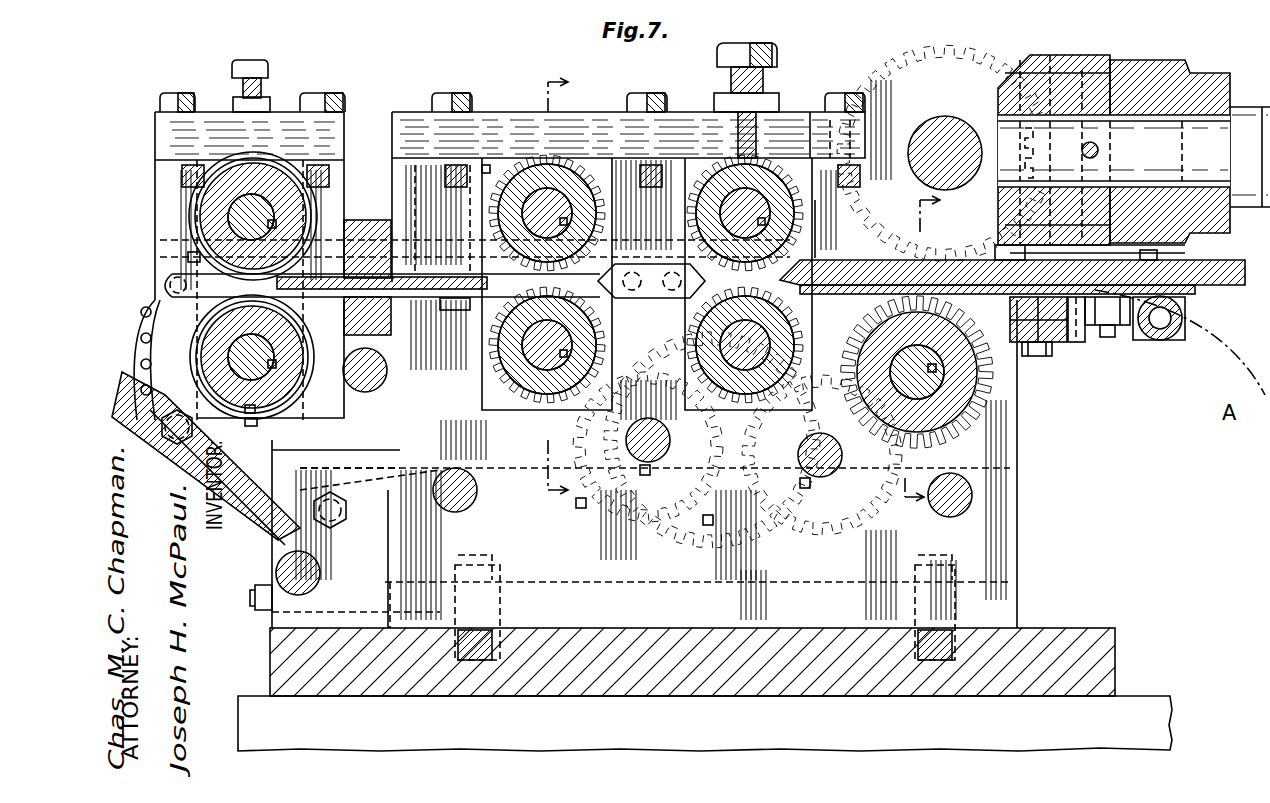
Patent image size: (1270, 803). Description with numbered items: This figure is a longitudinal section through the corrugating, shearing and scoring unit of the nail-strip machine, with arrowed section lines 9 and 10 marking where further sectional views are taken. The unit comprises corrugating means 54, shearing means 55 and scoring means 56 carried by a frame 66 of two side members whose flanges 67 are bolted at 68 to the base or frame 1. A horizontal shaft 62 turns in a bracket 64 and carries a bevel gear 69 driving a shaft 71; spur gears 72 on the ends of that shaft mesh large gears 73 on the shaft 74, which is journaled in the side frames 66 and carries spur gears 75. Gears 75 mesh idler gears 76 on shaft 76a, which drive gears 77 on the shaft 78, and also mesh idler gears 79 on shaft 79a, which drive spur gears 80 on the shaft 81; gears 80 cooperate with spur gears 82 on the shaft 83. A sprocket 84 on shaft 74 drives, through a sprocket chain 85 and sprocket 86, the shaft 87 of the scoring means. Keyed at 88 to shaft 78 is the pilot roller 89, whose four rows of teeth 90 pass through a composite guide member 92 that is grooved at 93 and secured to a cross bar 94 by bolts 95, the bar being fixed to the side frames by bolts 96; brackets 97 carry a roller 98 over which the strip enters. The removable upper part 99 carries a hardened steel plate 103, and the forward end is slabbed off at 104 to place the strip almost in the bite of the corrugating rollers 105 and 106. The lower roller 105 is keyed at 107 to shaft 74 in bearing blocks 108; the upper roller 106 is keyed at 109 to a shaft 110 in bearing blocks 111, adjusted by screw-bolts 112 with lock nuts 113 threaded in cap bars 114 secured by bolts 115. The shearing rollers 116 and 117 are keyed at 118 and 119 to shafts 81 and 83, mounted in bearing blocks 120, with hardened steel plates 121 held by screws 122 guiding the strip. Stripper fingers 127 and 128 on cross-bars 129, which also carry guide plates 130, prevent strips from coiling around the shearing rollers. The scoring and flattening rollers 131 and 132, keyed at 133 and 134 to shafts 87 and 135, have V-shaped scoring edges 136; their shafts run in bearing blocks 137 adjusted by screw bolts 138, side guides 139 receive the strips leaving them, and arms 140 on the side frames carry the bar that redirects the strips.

The base or frame 1 is at (1132, 705).
The section line 9 is at (566, 287).
The section line 10 is at (934, 354).
The corrugating means 54 is at (770, 160).
The shearing means 55 is at (528, 152).
The scoring means 56 is at (280, 150).
The horizontal shaft 62 is at (1246, 105).
The bracket 64 is at (1165, 62).
The frame 66 is at (1020, 508).
The flanges 67 is at (574, 582).
The bolts 68 is at (500, 605).
The bevel gear 69 is at (1038, 68).
The shaft 71 is at (945, 118).
The spur gears 72 is at (952, 55).
The large gears 73 is at (650, 524).
The shaft 74 is at (752, 395).
The spur gears 75 is at (690, 340).
The idler gears 76 is at (830, 530).
The shaft 76a is at (805, 488).
The gears 77 is at (961, 484).
The shaft 78 is at (985, 395).
The idler gears 79 is at (578, 506).
The shaft 79a is at (645, 474).
The spur gears 80 is at (480, 368).
The shaft 81 is at (500, 345).
The spur gears 82 is at (482, 212).
The shaft 83 is at (560, 195).
The sprocket 84 is at (830, 454).
The sprocket chain 85 is at (478, 490).
The sprocket 86 is at (322, 466).
The shaft 87 is at (257, 412).
The key 88 is at (1005, 385).
The pilot roller 89 is at (985, 415).
The rows of teeth 90 is at (1040, 345).
The composite guide member 92 is at (835, 285).
The groove or slot 93 is at (818, 258).
The cross bar 94 is at (1080, 344).
The bolts 95 is at (1052, 355).
The bolts 96 is at (1095, 326).
The brackets 97 is at (1116, 332).
The roller 98 is at (1178, 332).
The upper part of guide member 99 is at (1228, 262).
The hardened steel plate 103 is at (1000, 250).
The slabbed-off forward end 104 is at (820, 158).
The lower corrugating roller 105 is at (735, 372).
The upper corrugating roller 106 is at (708, 226).
The key 107 is at (688, 355).
The bearing blocks 108 is at (706, 524).
The key 109 is at (745, 175).
The shaft 110 is at (715, 175).
The bearing blocks 111 is at (670, 165).
The screw-bolts 112 is at (768, 43).
The lock nuts 113 is at (731, 90).
The cap bars 114 is at (410, 112).
The bolts 115 is at (452, 93).
The lower shearing roller 116 is at (515, 392).
The upper shearing roller 117 is at (495, 235).
The key 118 is at (540, 347).
The key 119 is at (560, 222).
The bearing blocks 120 is at (485, 170).
The hardened steel plates 121 is at (640, 298).
The screws 122 is at (648, 268).
The stripper finger 127 is at (442, 262).
The stripper finger 128 is at (448, 312).
The cross-bars 129 is at (385, 212).
The guide plates 130 is at (380, 222).
The scoring and flattening roller 131 is at (237, 395).
The scoring and flattening roller 132 is at (196, 210).
The key 133 is at (282, 340).
The key 134 is at (226, 228).
The shaft 135 is at (240, 204).
The V-shaped scoring edges 136 is at (190, 263).
The bearing blocks 137 is at (306, 165).
The screw bolts 138 is at (236, 68).
The side guides 139 is at (165, 287).
The arms 140 is at (262, 425).